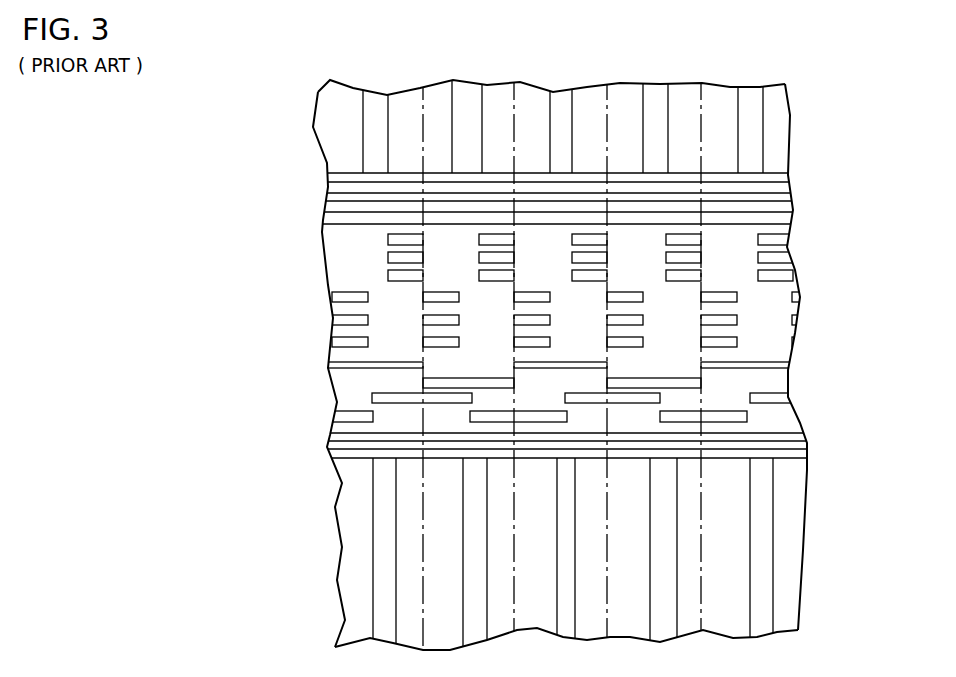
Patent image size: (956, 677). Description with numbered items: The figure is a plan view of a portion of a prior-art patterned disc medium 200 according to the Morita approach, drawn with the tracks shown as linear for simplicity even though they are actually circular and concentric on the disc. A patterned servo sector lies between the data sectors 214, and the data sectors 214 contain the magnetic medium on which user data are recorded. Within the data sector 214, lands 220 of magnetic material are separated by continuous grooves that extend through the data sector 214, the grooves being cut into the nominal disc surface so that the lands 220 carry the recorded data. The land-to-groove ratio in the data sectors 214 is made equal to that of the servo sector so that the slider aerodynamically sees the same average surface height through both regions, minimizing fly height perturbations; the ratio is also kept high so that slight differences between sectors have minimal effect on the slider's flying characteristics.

The disc medium 200 is at (798, 321).
The data sectors 214 is at (220, 495).
The lands 220 is at (410, 113).